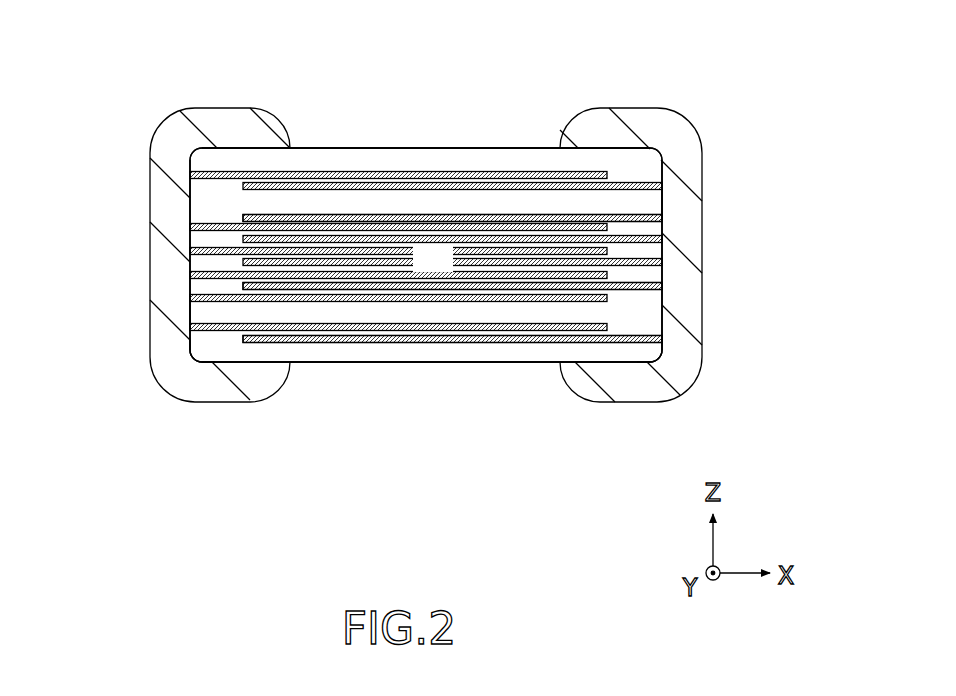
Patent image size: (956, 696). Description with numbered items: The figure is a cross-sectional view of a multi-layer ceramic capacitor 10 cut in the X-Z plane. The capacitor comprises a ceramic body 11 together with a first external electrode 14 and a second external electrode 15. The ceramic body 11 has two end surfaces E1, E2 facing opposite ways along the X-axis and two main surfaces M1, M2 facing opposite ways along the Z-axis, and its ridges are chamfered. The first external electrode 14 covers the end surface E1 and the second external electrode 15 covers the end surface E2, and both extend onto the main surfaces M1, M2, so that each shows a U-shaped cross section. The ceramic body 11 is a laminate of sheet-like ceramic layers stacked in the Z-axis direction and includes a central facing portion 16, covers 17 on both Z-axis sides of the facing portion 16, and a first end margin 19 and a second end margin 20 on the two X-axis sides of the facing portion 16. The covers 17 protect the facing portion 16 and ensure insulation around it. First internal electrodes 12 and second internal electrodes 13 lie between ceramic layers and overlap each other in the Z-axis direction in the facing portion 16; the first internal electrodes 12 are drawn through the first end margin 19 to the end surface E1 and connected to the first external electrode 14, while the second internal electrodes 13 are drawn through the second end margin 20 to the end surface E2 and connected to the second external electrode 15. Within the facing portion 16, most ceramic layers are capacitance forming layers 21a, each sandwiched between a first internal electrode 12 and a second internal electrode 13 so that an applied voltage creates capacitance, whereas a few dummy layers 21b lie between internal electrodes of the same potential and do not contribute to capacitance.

The multi-layer ceramic capacitor 10 is at (136, 79).
The ceramic body 11 is at (316, 69).
The first internal electrodes 12 is at (234, 178).
The second internal electrodes 13 is at (618, 188).
The first external electrode 14 is at (170, 258).
The second external electrode 15 is at (690, 259).
The facing portion 16 is at (426, 240).
The covers 17 is at (469, 160).
The first end margin 19 is at (210, 350).
The second end margin 20 is at (630, 350).
The capacitance forming layer 21a is at (327, 214).
The dummy layer 21b is at (185, 314).
The end surface E1 is at (187, 201).
The end surface E2 is at (664, 307).
The main surface M1 is at (401, 147).
The main surface M2 is at (402, 363).